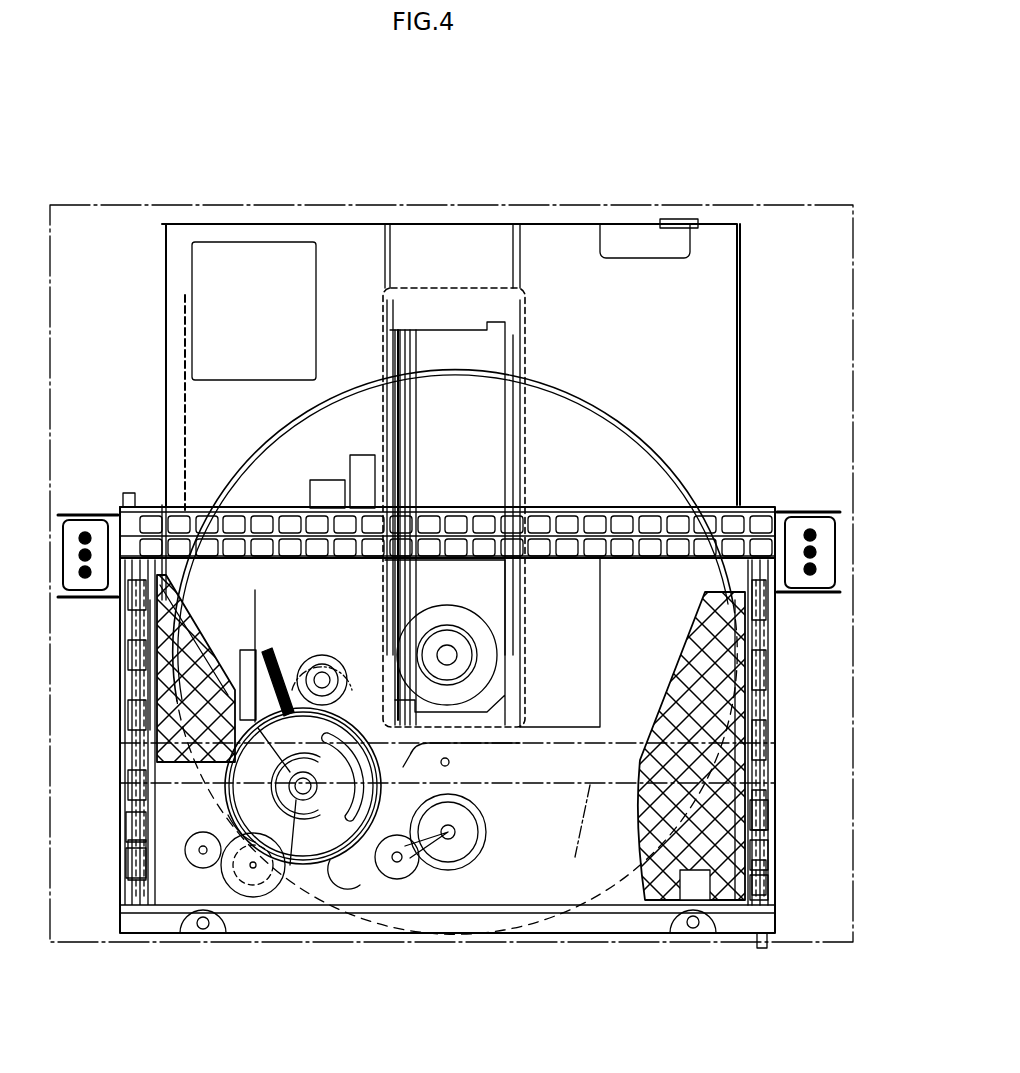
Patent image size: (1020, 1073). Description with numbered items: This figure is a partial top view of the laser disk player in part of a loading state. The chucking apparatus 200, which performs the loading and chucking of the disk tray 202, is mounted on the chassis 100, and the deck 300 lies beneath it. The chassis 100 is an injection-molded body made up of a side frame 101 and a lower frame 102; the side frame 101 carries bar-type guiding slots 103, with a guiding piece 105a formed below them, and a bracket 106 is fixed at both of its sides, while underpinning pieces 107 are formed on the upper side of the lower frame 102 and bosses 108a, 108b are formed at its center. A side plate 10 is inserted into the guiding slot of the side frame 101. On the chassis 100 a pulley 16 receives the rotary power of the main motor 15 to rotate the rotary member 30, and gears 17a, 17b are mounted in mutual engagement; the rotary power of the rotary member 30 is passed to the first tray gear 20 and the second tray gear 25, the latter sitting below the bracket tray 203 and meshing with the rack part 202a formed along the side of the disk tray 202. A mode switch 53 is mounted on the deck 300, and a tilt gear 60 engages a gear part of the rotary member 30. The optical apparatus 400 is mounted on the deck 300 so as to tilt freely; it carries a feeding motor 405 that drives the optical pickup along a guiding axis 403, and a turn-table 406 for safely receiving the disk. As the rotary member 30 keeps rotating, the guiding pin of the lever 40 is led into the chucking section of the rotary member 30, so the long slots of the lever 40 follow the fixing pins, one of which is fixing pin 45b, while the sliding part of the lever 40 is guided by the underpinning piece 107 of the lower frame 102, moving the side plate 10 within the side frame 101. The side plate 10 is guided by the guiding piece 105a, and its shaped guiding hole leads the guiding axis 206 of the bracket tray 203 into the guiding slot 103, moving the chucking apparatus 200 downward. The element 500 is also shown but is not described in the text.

The side plate 10 is at (128, 492).
The main motor 15 is at (456, 848).
The pulley 16 is at (430, 885).
The gear 17a is at (380, 880).
The gear 17b is at (341, 882).
The first tray gear 20 is at (253, 875).
The second tray gear 25 is at (198, 862).
The rotary member 30 is at (128, 713).
The lever 40 is at (572, 835).
The fixing pin 45b is at (449, 763).
The mode switch 53 is at (258, 650).
The tilt gear 60 is at (322, 654).
The chassis 100 is at (712, 510).
The side frame 101 is at (778, 790).
The lower frame 102 is at (235, 560).
The guiding slot 103 is at (120, 822).
The guiding piece 105a is at (775, 875).
The bracket 106 is at (840, 562).
The underpinning piece 107 is at (130, 700).
The boss 108a is at (330, 880).
The boss 108b is at (258, 905).
The chucking apparatus 200 is at (688, 600).
The disk tray 202 is at (338, 258).
The rack part 202a is at (190, 302).
The bracket tray 203 is at (665, 878).
The guiding axis 206 is at (120, 853).
The deck 300 is at (618, 593).
The optical apparatus 400 is at (437, 282).
The guiding axis 403 is at (405, 400).
The feeding motor 405 is at (330, 480).
The turn-table 406 is at (478, 680).
The tab 500 is at (690, 212).